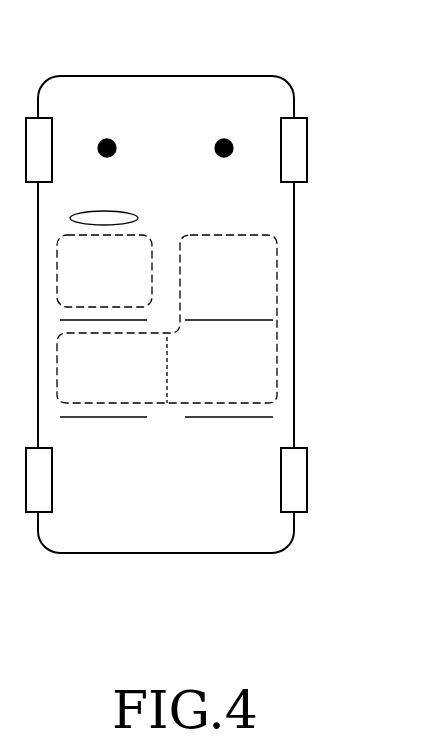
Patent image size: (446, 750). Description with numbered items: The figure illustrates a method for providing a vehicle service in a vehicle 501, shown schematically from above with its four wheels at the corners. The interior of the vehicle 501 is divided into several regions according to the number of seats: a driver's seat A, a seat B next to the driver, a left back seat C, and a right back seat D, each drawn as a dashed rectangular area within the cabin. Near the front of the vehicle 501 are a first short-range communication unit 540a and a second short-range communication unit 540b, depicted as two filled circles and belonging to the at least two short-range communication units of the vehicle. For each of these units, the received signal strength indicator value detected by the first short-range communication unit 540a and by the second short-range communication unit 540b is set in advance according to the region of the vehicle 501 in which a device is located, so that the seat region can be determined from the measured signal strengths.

The vehicle 501 is at (352, 103).
The first short-range communication unit 540a is at (107, 139).
The second short-range communication unit 540b is at (223, 139).